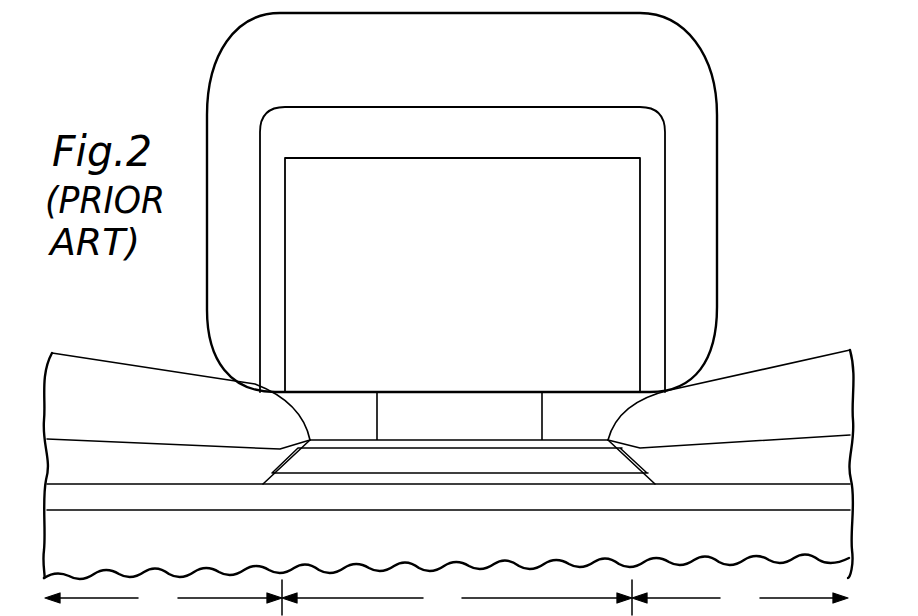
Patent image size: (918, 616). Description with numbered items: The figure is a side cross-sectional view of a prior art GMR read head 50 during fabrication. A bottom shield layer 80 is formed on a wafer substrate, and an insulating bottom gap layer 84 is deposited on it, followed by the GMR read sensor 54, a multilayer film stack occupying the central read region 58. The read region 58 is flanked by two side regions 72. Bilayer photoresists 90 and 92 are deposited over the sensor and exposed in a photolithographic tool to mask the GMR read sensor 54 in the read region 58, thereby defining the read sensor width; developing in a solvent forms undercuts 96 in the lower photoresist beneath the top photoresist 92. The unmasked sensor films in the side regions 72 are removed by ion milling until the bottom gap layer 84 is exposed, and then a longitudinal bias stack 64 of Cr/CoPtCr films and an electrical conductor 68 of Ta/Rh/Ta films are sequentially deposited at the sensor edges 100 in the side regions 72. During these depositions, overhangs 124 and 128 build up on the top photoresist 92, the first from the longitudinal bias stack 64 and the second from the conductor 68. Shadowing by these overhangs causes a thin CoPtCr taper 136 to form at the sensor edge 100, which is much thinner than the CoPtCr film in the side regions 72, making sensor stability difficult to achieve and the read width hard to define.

The GMR read head 50 is at (718, 343).
The overhang 128 is at (488, 67).
The overhang 124 is at (485, 147).
The top photoresist 92 is at (481, 254).
The undercut 96 is at (349, 428).
The bottom photoresist 90 is at (477, 428).
The GMR read sensor 54 is at (397, 458).
The electrical conductor 68 is at (92, 420).
The longitudinal bias stack 64 is at (88, 478).
The CoPtCr taper 136 is at (292, 447).
The sensor edge 100 is at (284, 463).
The bottom gap layer 84 is at (684, 496).
The bottom shield layer 80 is at (604, 546).
The side region 72 is at (826, 305).
The read region 58 is at (457, 600).